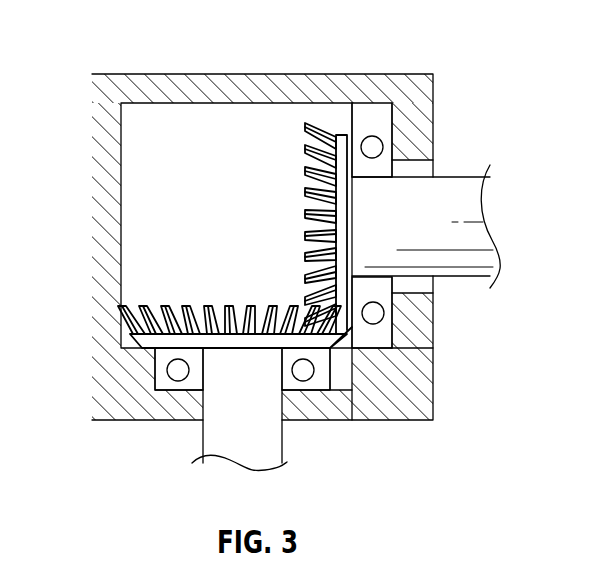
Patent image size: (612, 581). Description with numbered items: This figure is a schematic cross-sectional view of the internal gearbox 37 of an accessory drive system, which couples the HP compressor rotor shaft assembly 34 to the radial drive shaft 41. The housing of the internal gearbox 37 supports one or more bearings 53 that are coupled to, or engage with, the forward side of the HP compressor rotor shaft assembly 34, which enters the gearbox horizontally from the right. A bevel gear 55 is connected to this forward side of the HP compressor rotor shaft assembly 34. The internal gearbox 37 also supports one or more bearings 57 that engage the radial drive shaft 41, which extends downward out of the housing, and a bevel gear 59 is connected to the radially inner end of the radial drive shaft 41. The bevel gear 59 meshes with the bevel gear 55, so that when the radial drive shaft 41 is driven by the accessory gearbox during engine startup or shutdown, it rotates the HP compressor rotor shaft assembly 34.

The internal gearbox 37 is at (217, 75).
The bevel gear 55 is at (325, 138).
The bearings 53 is at (380, 113).
The HP compressor rotor shaft assembly 34 is at (460, 187).
The bevel gear 59 is at (232, 310).
The radial drive shaft 41 is at (275, 433).
The bearings 57 is at (197, 392).